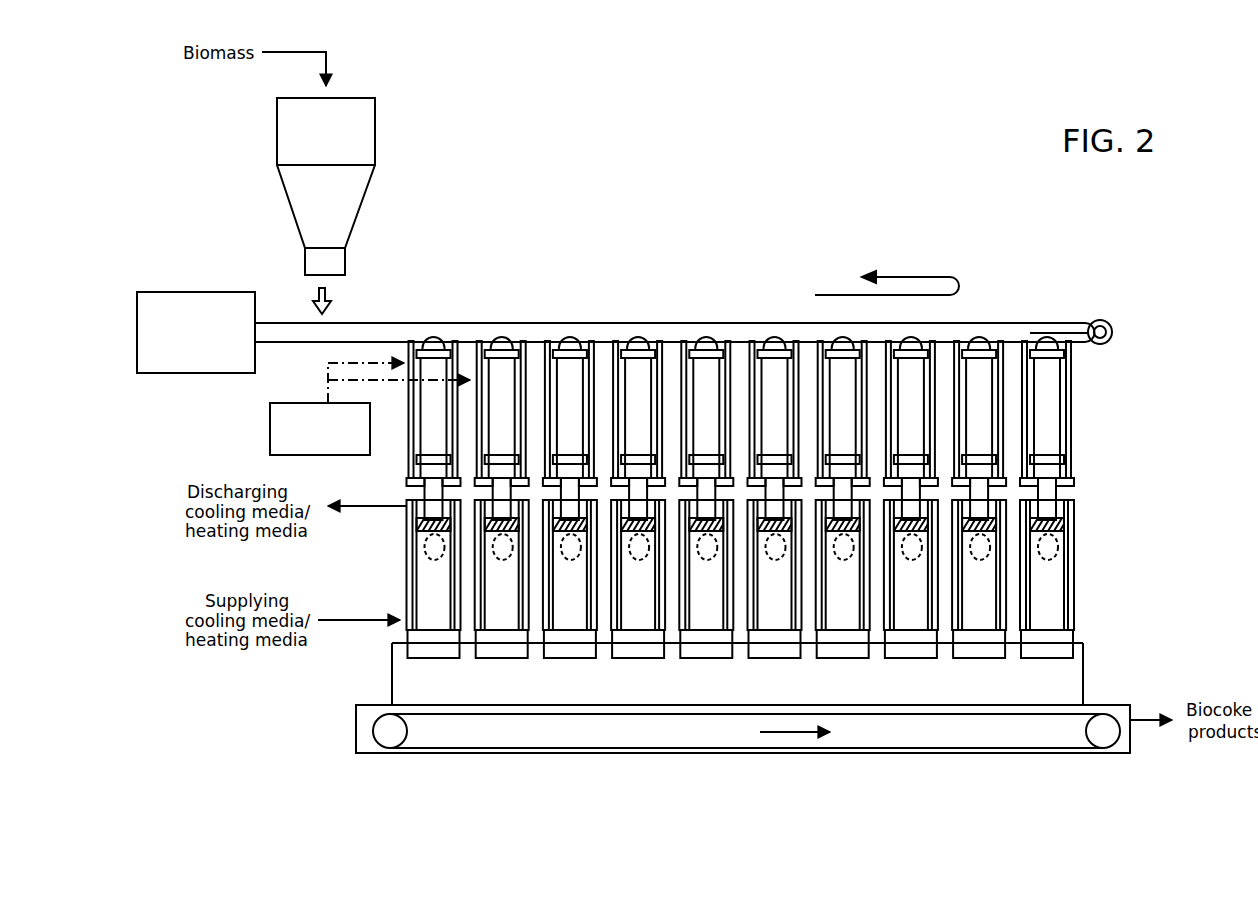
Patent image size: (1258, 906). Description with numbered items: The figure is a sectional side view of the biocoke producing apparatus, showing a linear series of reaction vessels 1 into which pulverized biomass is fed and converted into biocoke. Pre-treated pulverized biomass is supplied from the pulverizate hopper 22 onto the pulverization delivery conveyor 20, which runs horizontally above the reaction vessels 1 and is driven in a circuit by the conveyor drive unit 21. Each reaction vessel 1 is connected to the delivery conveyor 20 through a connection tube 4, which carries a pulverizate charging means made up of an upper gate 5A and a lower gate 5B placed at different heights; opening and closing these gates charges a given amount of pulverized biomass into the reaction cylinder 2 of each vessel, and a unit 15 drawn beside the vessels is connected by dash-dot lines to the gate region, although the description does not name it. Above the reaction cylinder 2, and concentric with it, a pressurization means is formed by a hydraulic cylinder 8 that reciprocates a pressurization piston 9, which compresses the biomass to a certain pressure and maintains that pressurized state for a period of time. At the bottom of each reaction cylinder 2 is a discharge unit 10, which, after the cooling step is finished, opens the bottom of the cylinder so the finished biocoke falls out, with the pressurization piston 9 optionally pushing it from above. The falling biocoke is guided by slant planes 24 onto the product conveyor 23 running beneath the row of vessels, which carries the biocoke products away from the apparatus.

The reaction vessel 1 is at (453, 420).
The reaction cylinder 2 is at (1069, 565).
The connection tube 4 is at (1081, 418).
The upper gate 5A is at (1074, 354).
The lower gate 5B is at (1074, 456).
The hydraulic cylinder 8 is at (1072, 413).
The pressurization piston 9 is at (1069, 519).
The discharge unit 10 is at (756, 638).
The controller 15 is at (268, 429).
The pulverization delivery conveyor 20 is at (680, 322).
The conveyor drive unit 21 is at (178, 291).
The pulverizate hopper 22 is at (376, 114).
The product conveyor 23 is at (963, 742).
The slant plane 24 is at (1088, 686).